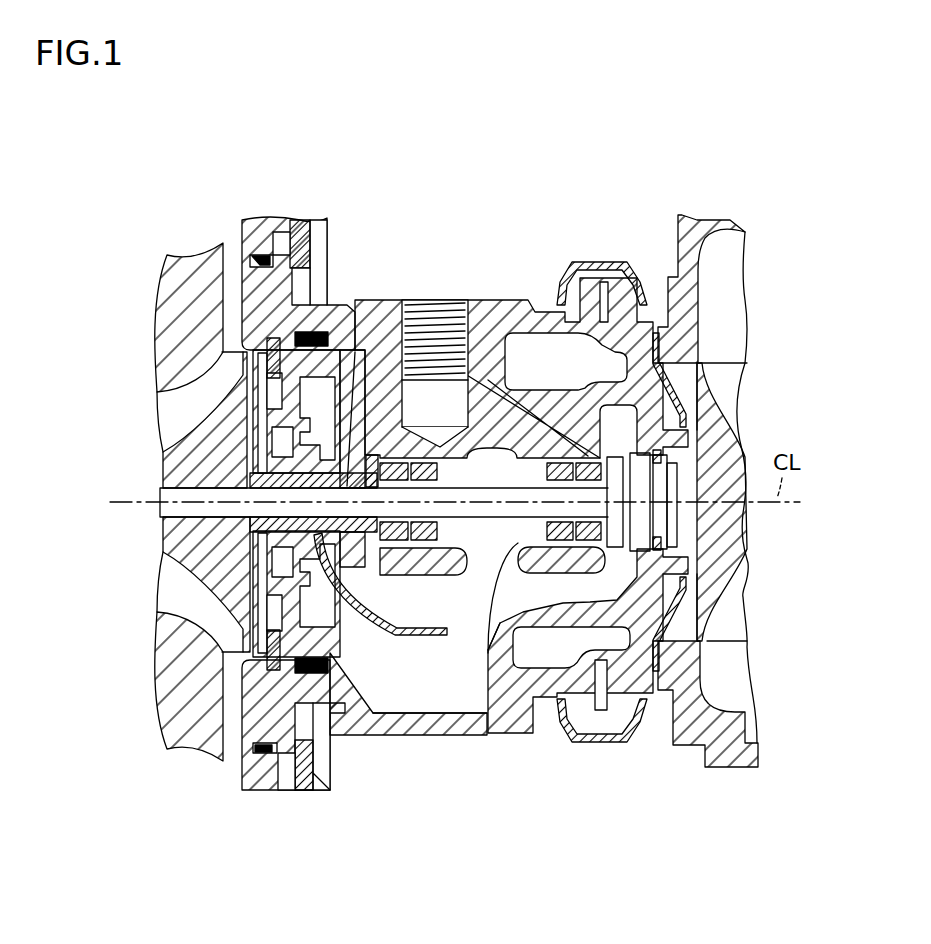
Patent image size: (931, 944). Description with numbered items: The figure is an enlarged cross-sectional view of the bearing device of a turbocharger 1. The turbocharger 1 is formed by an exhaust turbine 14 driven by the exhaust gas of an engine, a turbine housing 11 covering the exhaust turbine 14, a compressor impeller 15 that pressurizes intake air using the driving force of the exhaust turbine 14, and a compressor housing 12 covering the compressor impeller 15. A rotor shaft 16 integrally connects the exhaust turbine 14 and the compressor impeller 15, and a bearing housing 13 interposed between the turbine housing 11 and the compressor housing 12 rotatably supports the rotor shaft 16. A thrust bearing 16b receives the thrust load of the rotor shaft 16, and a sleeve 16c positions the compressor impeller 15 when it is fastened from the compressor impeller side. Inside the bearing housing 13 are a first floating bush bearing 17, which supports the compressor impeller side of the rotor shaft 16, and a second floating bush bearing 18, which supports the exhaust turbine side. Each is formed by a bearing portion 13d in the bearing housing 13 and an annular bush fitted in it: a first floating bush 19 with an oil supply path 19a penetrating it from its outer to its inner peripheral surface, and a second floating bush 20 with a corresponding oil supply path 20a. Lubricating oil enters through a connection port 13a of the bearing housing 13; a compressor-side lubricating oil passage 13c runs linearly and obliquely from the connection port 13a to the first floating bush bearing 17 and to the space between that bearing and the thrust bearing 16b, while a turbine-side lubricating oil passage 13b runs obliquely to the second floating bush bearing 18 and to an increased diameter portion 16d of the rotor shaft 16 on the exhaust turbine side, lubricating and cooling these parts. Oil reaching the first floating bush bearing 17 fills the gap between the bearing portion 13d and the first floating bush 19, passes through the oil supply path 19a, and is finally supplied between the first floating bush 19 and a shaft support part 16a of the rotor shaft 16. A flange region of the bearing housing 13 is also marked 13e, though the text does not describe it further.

The turbocharger 1 is at (523, 213).
The turbine housing 11 is at (706, 194).
The compressor housing 12 is at (213, 237).
The bearing housing 13 is at (365, 298).
The connection port 13a is at (413, 330).
The turbine-side lubricating oil passage 13b is at (497, 405).
The compressor-side lubricating oil passage 13c is at (437, 425).
The bearing portion 13d is at (447, 585).
The housing flange 13e is at (375, 720).
The exhaust turbine 14 is at (712, 430).
The compressor impeller 15 is at (205, 400).
The rotor shaft 16 is at (158, 506).
The shaft support part 16a is at (527, 478).
The thrust bearing 16b is at (373, 535).
The sleeve 16c is at (340, 615).
The increased diameter portion 16d is at (640, 580).
The first floating bush bearing 17 is at (443, 578).
The second floating bush bearing 18 is at (517, 583).
The first floating bush 19 is at (452, 583).
The oil supply path 19a is at (410, 540).
The second floating bush 20 is at (470, 533).
The oil supply path 20a is at (575, 540).